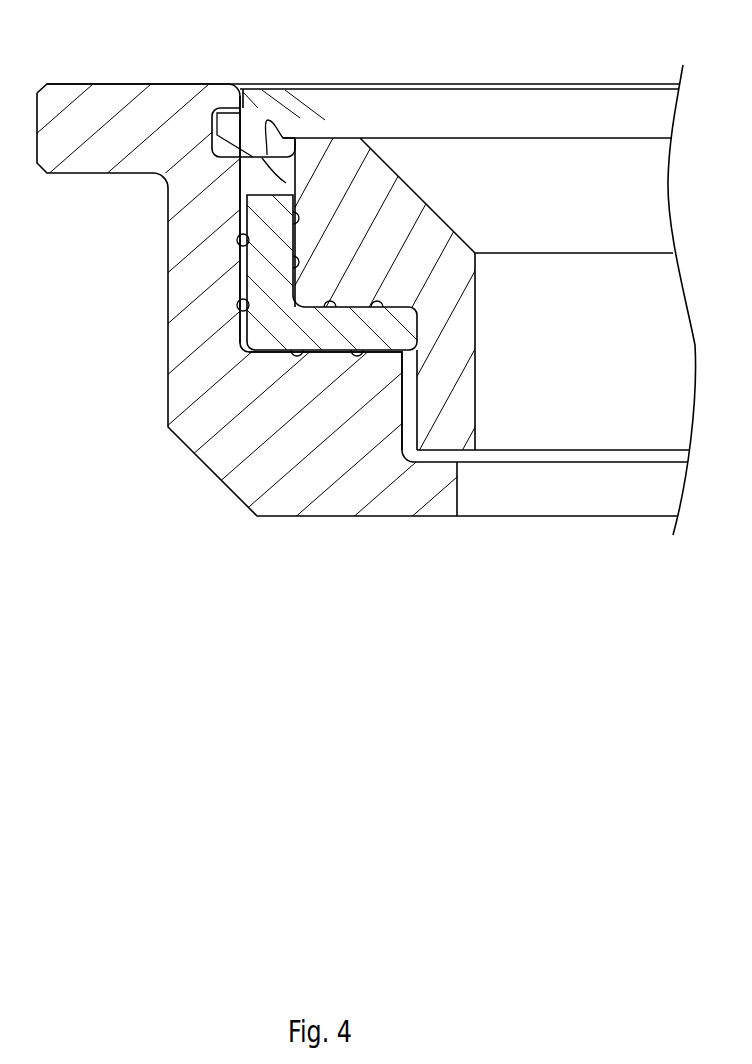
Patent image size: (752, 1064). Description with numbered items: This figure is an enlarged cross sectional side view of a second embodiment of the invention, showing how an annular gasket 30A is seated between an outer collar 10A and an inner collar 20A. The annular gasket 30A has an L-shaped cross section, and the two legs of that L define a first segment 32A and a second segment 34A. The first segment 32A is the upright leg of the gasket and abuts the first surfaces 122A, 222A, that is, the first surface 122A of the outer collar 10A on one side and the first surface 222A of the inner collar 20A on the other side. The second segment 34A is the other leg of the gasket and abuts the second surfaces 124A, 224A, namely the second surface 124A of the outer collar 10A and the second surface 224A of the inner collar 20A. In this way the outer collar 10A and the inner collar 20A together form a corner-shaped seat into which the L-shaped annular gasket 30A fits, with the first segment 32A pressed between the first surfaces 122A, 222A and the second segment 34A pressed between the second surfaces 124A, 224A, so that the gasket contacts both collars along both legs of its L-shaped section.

The outer collar 10A is at (160, 455).
The inner collar 20A is at (524, 152).
The annular gasket 30A is at (343, 345).
The first segment 32A is at (268, 218).
The second segment 34A is at (330, 353).
The first surface 122A is at (240, 260).
The second surface 124A is at (308, 352).
The first surface 222A is at (262, 158).
The second surface 224A is at (352, 306).